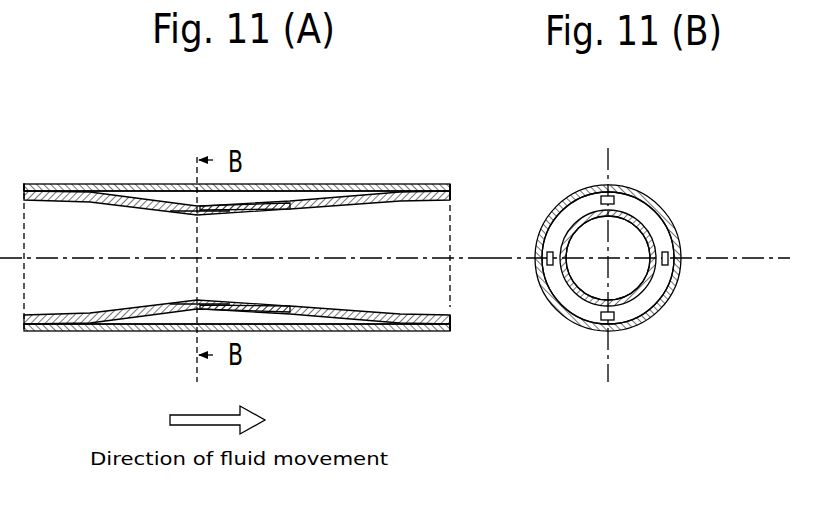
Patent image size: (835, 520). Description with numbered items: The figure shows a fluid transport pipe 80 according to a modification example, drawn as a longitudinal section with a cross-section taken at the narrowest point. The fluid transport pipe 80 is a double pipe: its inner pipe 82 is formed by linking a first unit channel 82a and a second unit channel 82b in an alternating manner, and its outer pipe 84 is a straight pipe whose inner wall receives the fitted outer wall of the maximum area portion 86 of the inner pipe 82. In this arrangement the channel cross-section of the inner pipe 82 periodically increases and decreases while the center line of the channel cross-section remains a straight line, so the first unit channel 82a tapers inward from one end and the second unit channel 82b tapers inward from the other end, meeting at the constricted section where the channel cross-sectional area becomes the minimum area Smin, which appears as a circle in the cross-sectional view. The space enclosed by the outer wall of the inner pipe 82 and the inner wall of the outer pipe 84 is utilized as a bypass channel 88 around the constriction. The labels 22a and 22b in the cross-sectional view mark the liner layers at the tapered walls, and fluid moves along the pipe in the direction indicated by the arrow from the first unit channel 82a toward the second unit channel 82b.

In FIG. 11A, the fluid transport pipe 80 is at (275, 250).
In FIG. 11B, the fluid transport pipe 80 is at (651, 276).
In FIG. 11A, the inner pipe 82 is at (453, 200).
In FIG. 11B, the inner pipe 82 is at (628, 302).
In FIG. 11A, the outer pipe 84 is at (253, 184).
In FIG. 11B, the outer pipe 84 is at (585, 190).
In FIG. 11A, the maximum area portion 86 is at (25, 283).
In FIG. 11A, the bypass channel 88 is at (222, 316).
In FIG. 11B, the bypass channel 88 is at (645, 300).
In FIG. 11A, the upstream liner layer 22a is at (133, 198).
In FIG. 11B, the upstream liner layer 22a is at (675, 158).
In FIG. 11A, the downstream liner layer 22b is at (287, 203).
In FIG. 11B, the downstream liner layer 22b is at (735, 202).
In FIG. 11A, the first unit channel 82a is at (107, 287).
In FIG. 11A, the second unit channel 82b is at (368, 287).
In FIG. 11B, the minimum area Smin is at (628, 270).